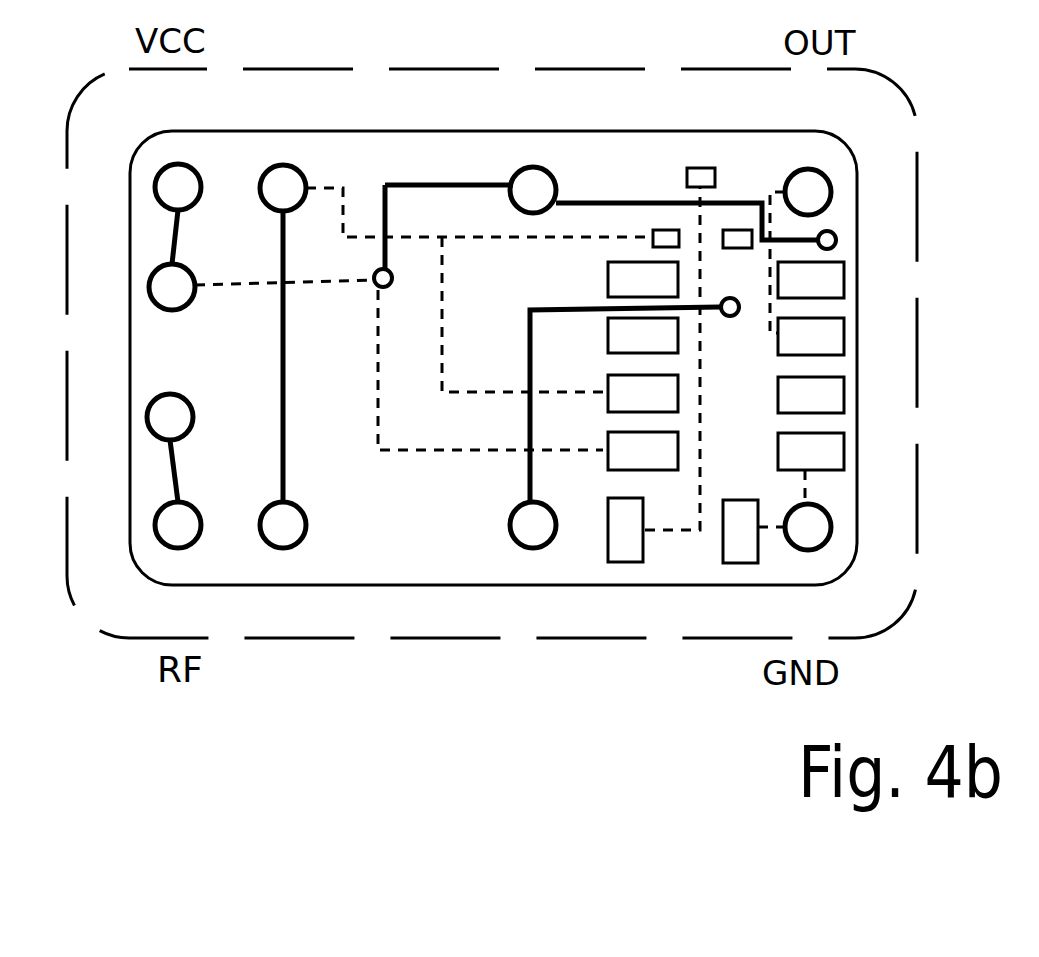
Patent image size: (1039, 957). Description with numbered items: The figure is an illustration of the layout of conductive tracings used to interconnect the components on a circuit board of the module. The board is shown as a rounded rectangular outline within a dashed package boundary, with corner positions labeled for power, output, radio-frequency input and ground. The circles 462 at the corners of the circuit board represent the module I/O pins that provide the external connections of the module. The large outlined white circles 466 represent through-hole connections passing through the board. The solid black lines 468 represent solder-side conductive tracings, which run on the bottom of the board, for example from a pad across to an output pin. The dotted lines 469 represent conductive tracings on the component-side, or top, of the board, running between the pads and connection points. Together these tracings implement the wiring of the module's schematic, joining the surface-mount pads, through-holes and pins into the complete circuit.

The module I/O pins 462 is at (166, 541).
The through-hole connections 466 is at (289, 540).
The solder-side conductive tracings 468 is at (652, 203).
The component-side conductive tracings 469 is at (437, 450).